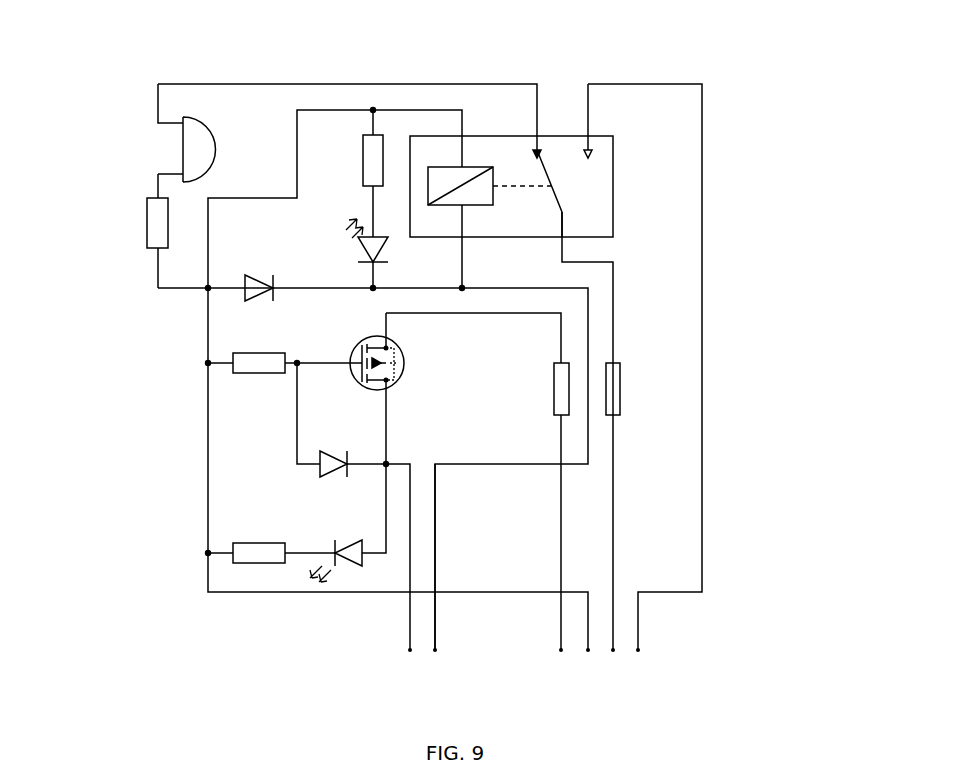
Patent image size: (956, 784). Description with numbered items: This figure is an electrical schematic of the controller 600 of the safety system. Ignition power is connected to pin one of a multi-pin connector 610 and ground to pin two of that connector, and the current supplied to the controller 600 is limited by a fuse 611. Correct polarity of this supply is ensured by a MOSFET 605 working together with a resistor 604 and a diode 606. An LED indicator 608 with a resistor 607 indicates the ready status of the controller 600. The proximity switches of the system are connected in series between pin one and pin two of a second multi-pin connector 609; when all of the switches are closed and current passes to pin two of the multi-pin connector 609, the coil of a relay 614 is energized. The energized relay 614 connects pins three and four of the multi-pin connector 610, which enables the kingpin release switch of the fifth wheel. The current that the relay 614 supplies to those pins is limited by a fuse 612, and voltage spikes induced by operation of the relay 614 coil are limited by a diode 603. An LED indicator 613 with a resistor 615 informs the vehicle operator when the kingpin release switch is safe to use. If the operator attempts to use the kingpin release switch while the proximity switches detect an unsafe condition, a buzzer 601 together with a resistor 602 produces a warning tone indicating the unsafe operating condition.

The controller 600 is at (804, 233).
The buzzer 601 is at (177, 146).
The resistor 602 is at (140, 223).
The diode 603 is at (240, 290).
The resistor 604 is at (240, 370).
The MOSFET 605 is at (350, 382).
The diode 606 is at (317, 472).
The resistor 607 is at (255, 572).
The LED indicator 608 is at (342, 572).
The multi-pin connector 609 is at (392, 638).
The multi-pin connector 610 is at (652, 635).
The fuse 611 is at (577, 413).
The fuse 612 is at (623, 412).
The LED indicator 613 is at (388, 262).
The relay 614 is at (620, 150).
The resistor 615 is at (377, 130).